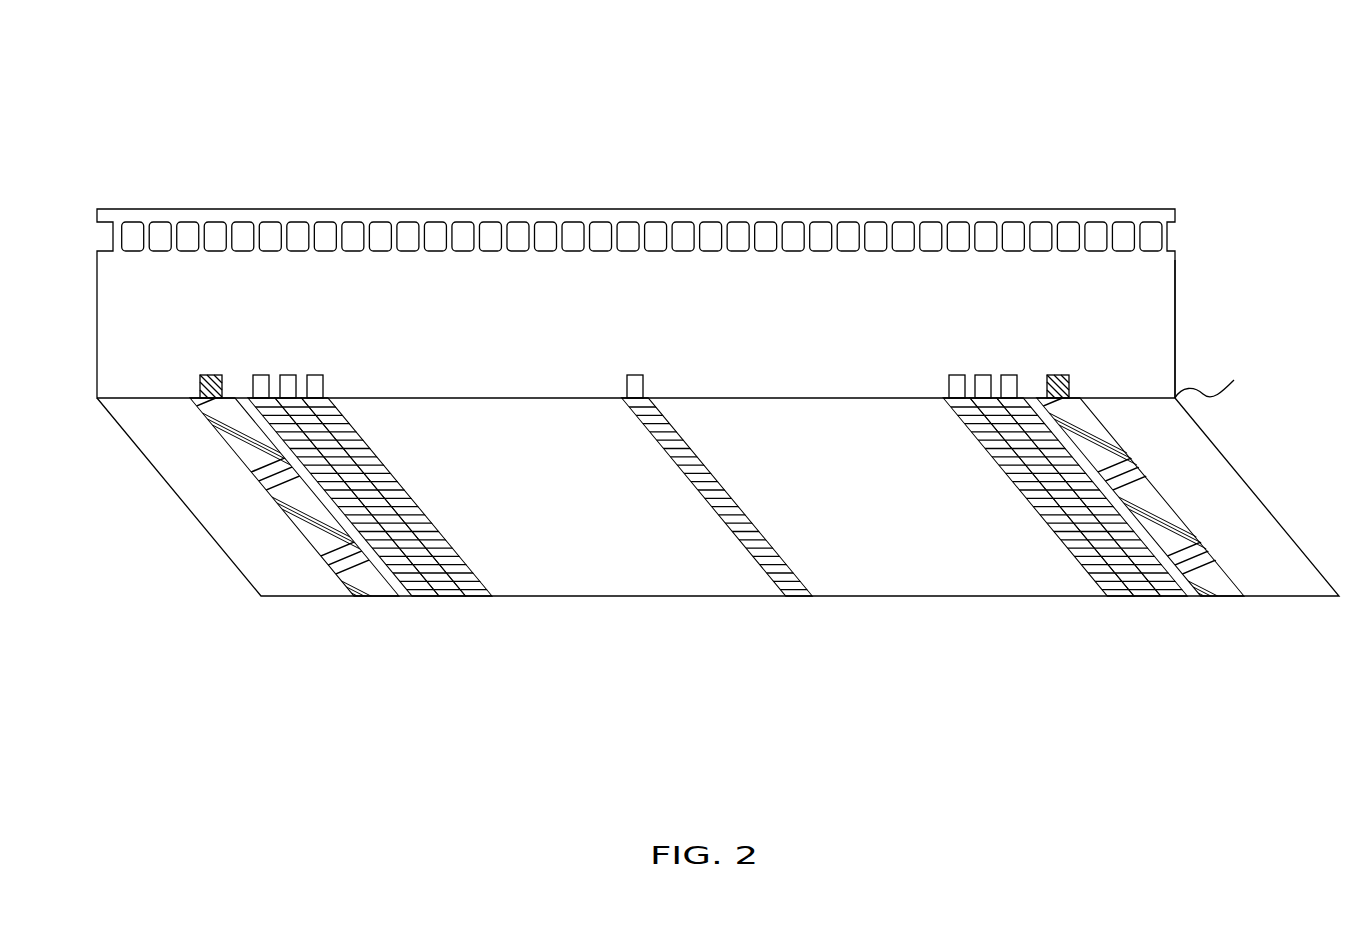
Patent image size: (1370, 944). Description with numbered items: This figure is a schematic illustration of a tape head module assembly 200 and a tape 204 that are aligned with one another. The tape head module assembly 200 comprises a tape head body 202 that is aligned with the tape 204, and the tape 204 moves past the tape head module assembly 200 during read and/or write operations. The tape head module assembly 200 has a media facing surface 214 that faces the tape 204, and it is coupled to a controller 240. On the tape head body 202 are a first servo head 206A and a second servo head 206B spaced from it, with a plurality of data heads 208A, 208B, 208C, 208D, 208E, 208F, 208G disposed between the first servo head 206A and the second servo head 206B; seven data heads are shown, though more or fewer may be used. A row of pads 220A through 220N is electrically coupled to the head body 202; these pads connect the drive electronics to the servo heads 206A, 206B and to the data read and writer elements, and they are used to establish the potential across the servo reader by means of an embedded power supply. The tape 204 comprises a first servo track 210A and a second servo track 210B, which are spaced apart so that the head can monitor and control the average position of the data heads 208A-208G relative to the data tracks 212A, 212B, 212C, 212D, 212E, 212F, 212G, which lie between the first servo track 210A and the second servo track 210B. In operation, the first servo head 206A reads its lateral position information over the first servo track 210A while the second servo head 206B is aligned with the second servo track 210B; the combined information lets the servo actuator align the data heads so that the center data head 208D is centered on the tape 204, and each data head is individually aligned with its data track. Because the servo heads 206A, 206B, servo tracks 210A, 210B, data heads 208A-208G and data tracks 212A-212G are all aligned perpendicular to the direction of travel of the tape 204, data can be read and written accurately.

The tape head module assembly 200 is at (207, 57).
The tape head body 202 is at (1177, 291).
The tape 204 is at (1255, 497).
The first servo head 206A is at (214, 374).
The second servo head 206B is at (1055, 374).
The data head 208A is at (261, 374).
The data head 208B is at (288, 374).
The data head 208C is at (315, 374).
The data head 208D is at (631, 374).
The data head 208E is at (957, 374).
The data head 208F is at (983, 374).
The data head 208G is at (1010, 374).
The first servo track 210A is at (380, 598).
The second servo track 210B is at (1222, 598).
The data track 212A is at (427, 598).
The data track 212B is at (453, 598).
The data track 212C is at (480, 598).
The data track 212D is at (800, 598).
The data track 212E is at (1125, 598).
The data track 212F is at (1150, 598).
The data track 212G is at (1177, 598).
The media facing surface 214 is at (1125, 397).
The pad 220A is at (189, 222).
The pad 220N is at (1097, 222).
The controller 240 is at (1229, 381).